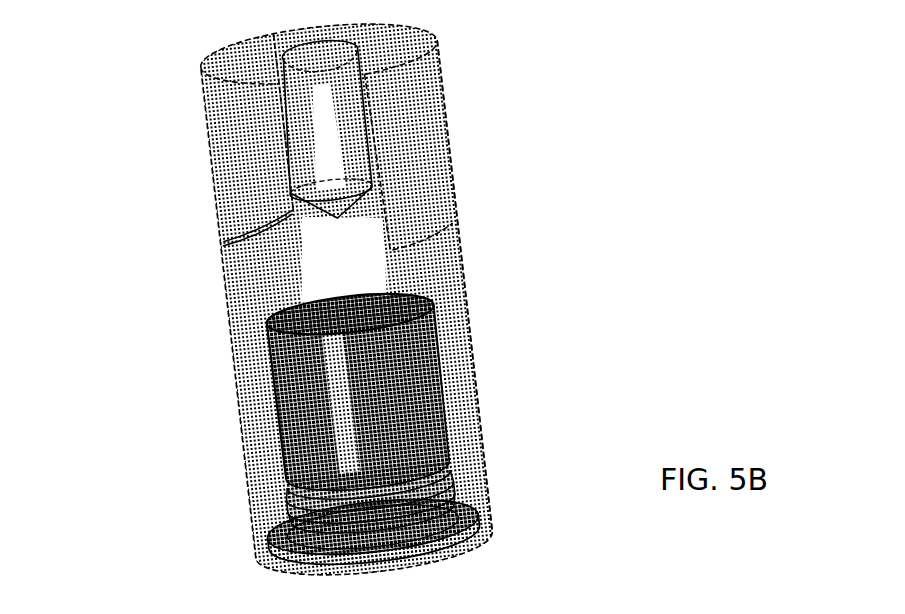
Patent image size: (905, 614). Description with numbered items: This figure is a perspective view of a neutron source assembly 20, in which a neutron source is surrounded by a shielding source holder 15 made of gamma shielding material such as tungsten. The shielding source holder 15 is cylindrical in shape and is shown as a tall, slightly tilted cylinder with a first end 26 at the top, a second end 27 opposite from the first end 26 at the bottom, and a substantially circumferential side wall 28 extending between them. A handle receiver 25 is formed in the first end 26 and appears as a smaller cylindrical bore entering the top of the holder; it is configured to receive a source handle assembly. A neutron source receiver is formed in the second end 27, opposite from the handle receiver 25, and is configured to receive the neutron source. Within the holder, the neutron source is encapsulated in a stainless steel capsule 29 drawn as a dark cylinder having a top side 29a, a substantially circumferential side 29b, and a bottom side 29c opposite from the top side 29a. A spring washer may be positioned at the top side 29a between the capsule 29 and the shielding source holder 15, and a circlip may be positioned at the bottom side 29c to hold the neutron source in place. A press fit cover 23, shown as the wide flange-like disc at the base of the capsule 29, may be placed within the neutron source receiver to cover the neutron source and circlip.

The neutron source assembly 20 is at (200, 38).
The first end 26 is at (465, 71).
The substantially circumferential side wall 28 is at (472, 322).
The shielding source holder 15 is at (262, 262).
The handle receiver 25 is at (330, 158).
The second end 27 is at (335, 437).
The stainless steel capsule 29 is at (400, 393).
The top side 29a is at (330, 305).
The substantially circumferential side 29b is at (273, 397).
The bottom side 29c is at (293, 500).
The press fit cover 23 is at (407, 530).